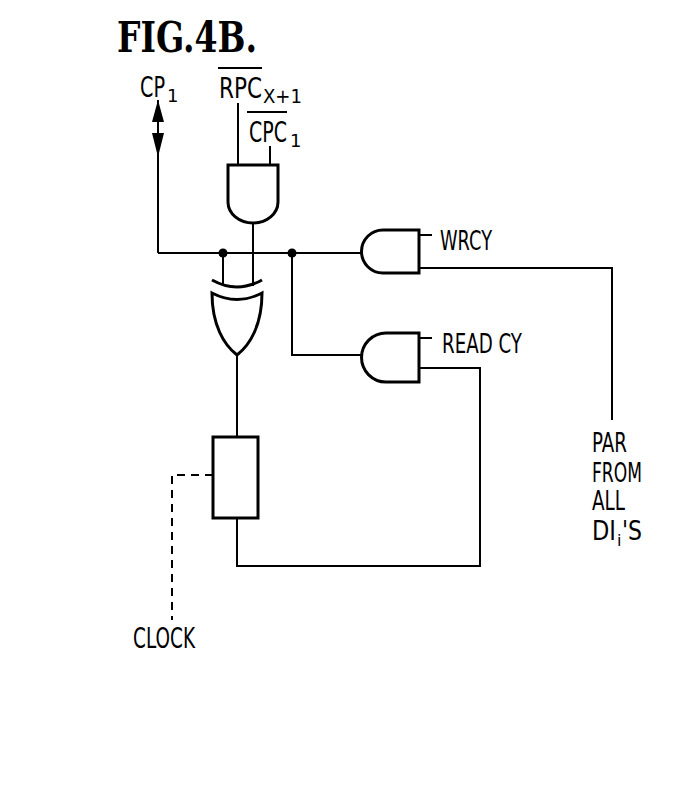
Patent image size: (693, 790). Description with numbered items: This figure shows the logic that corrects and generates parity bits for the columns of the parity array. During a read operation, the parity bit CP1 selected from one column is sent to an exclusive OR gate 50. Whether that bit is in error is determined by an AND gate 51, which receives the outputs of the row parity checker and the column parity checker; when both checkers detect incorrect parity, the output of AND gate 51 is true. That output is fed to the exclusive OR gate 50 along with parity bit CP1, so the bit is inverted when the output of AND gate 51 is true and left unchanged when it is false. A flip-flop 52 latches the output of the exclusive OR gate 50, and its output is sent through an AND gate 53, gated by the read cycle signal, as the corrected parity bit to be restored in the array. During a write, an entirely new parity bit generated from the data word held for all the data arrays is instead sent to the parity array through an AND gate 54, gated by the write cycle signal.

The exclusive OR gate 50 is at (248, 335).
The AND gate 51 is at (265, 200).
The flip-flop 52 is at (258, 472).
The AND gate 53 is at (405, 367).
The AND gate 54 is at (408, 265).